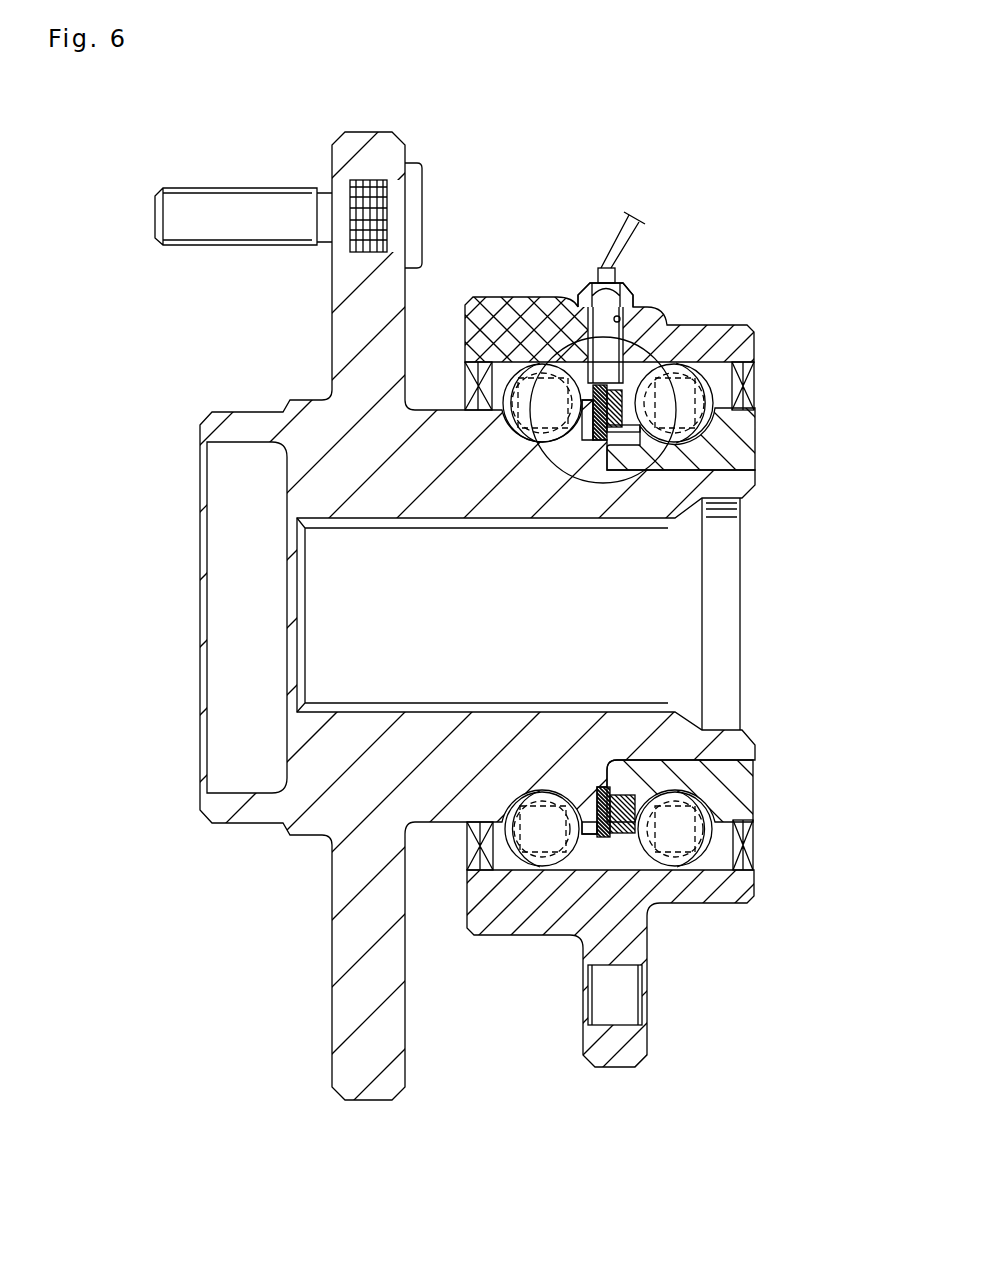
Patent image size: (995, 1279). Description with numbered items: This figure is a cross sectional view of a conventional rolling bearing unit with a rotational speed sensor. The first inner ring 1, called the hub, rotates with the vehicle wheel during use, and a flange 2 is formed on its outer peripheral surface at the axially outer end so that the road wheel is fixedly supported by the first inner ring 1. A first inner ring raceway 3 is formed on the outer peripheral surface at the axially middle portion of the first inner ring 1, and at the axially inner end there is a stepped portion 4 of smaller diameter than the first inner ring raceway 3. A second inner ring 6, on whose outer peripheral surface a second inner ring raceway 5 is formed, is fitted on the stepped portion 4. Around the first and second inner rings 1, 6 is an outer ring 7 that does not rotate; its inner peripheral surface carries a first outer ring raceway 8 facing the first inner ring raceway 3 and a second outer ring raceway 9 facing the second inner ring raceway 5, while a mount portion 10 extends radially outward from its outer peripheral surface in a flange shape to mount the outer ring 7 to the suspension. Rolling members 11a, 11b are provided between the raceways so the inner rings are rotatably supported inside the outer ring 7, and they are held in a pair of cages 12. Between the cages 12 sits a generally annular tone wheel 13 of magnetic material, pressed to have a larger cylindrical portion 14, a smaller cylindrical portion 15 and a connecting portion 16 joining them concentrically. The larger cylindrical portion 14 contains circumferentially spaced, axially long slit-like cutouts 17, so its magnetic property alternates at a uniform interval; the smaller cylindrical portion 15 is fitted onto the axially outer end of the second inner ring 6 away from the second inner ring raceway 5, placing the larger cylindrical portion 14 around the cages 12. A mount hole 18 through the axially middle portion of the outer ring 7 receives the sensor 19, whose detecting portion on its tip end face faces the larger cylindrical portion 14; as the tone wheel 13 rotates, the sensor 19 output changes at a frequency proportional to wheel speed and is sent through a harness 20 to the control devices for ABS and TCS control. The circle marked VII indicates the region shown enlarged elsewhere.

The first inner ring 1 is at (319, 390).
The flange 2 is at (395, 150).
The first inner ring raceway 3 is at (520, 836).
The stepped portion 4 is at (715, 466).
The second inner ring raceway 5 is at (712, 415).
The second inner ring 6 is at (737, 445).
The outer ring 7 is at (703, 888).
The first outer ring raceway 8 is at (538, 866).
The second outer ring raceway 9 is at (757, 860).
The mount portion 10 is at (605, 1055).
The rolling members 11a is at (528, 338).
The rolling members 11b is at (733, 325).
The cages 12 is at (520, 372).
The tone wheel 13 is at (600, 445).
The larger cylindrical portion 14 is at (606, 840).
The smaller cylindrical portion 15 is at (622, 432).
The connecting portion 16 is at (585, 420).
The slit-like cutouts 17 is at (597, 352).
The mount hole 18 is at (609, 372).
The sensor 19 is at (605, 313).
The harness 20 is at (637, 235).
The detail circle VII is at (762, 362).